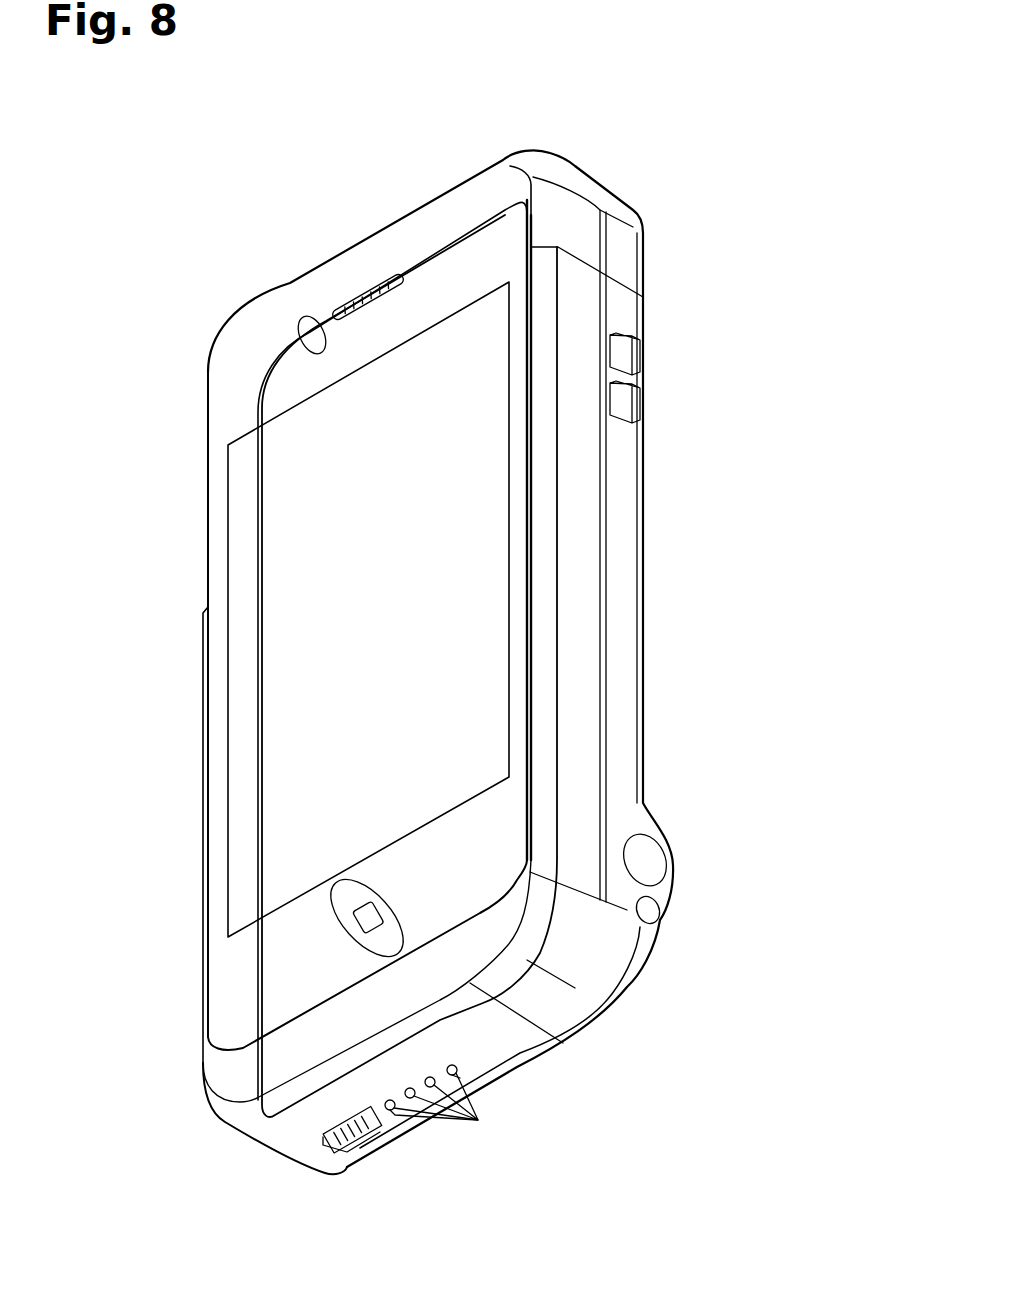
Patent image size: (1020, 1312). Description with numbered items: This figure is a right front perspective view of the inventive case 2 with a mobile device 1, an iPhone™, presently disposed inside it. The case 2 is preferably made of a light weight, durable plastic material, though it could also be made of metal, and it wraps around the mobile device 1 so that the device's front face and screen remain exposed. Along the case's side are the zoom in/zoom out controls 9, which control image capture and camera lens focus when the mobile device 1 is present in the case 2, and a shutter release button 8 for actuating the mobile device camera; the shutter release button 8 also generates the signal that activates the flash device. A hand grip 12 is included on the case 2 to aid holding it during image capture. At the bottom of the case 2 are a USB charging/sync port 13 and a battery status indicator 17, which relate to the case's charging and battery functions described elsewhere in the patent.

The mobile device 1 is at (435, 570).
The case 2 is at (576, 168).
The shutter release button 8 is at (675, 868).
The zoom in/zoom out controls 9 is at (643, 410).
The hand grip 12 is at (667, 850).
The USB charging/sync port 13 is at (375, 1143).
The battery status indicator 17 is at (480, 1120).